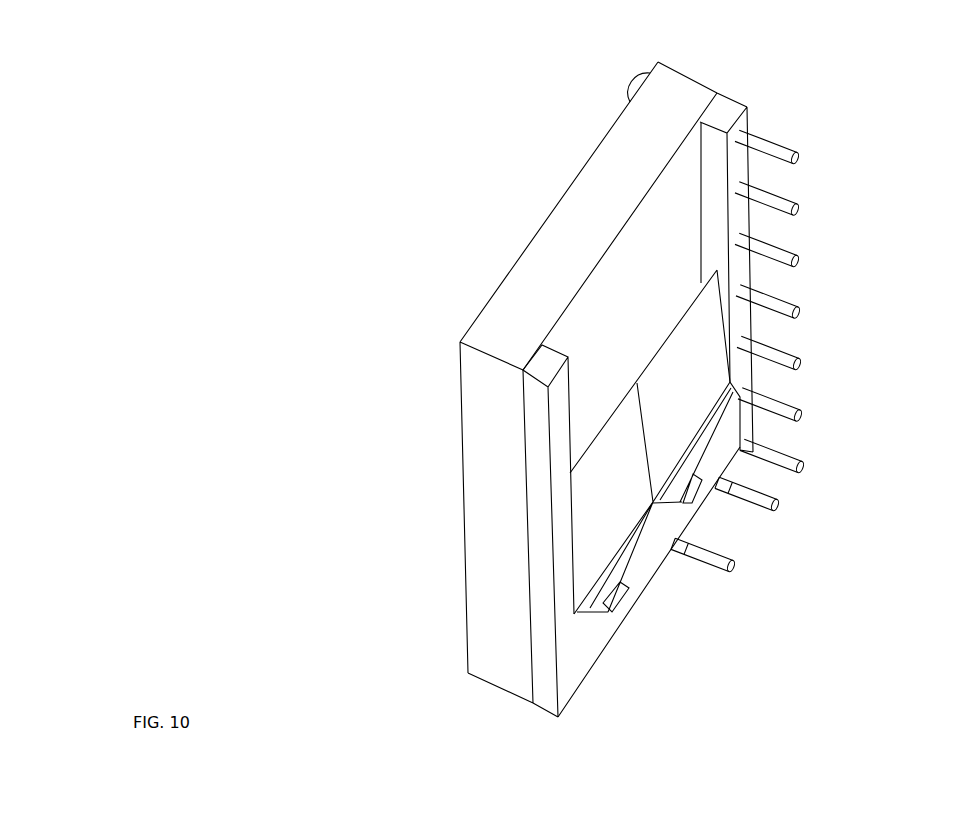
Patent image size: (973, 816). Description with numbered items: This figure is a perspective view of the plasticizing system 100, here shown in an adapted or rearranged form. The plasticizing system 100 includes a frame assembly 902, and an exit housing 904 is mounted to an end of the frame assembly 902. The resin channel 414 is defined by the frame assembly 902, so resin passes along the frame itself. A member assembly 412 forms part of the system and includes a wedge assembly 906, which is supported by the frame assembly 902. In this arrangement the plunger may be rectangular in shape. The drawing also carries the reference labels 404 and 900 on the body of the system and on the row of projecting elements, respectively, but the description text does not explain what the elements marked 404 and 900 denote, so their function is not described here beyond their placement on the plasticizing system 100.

The plasticizing system 100 is at (343, 242).
The housing 404 is at (491, 317).
The member assembly 412 is at (742, 597).
The resin channel 414 is at (712, 190).
The terminal pins 900 is at (777, 145).
The frame assembly 902 is at (537, 467).
The exit housing 904 is at (590, 648).
The wedge assembly 906 is at (597, 535).